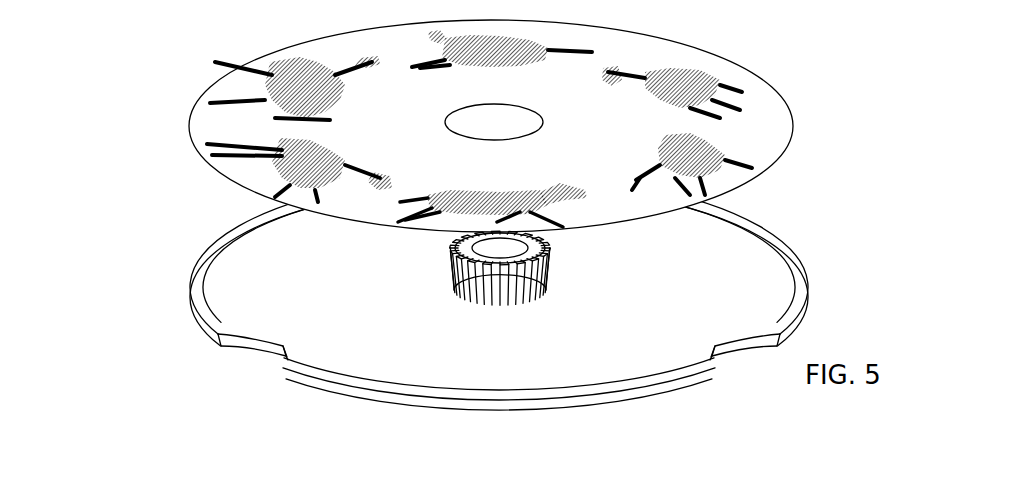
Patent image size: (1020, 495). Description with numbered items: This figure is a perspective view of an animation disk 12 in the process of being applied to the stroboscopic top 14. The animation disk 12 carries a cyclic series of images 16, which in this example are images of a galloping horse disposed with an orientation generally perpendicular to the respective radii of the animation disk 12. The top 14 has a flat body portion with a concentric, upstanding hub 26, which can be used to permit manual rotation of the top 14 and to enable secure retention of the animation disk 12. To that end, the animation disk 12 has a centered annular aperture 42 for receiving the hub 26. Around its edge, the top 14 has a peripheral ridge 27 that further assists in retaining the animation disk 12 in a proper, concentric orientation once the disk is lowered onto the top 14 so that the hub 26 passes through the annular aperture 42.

The animation disk 12 is at (205, 95).
The top 14 is at (190, 300).
The images 16 is at (660, 72).
The hub 26 is at (455, 292).
The peripheral ridge 27 is at (783, 246).
The annular aperture 42 is at (510, 107).